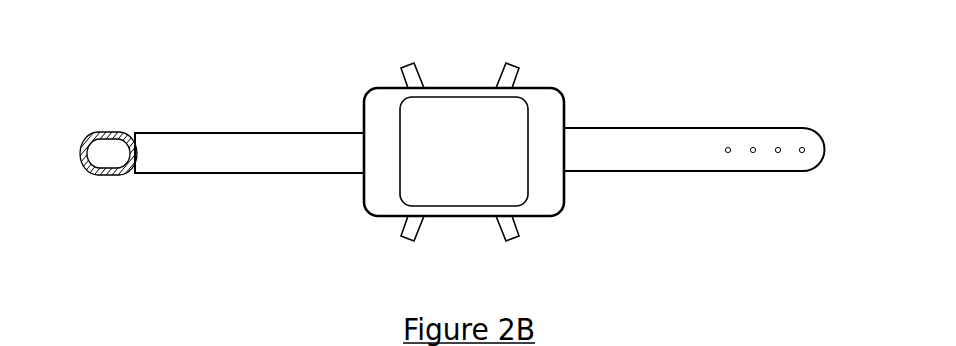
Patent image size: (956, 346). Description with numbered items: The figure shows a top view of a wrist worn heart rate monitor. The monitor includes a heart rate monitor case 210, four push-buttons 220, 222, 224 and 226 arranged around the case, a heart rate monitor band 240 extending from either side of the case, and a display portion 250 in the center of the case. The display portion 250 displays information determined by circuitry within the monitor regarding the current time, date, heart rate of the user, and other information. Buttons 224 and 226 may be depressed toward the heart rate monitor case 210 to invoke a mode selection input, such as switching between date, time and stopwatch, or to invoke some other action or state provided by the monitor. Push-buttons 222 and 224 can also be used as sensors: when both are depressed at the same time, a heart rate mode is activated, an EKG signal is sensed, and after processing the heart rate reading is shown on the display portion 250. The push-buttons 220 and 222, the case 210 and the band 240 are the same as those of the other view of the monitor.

The heart rate monitor case 210 is at (563, 98).
The push-button 220 is at (408, 238).
The push-button 222 is at (513, 238).
The push-button 224 is at (410, 66).
The push-button 226 is at (514, 67).
The heart rate monitor band 240 is at (640, 165).
The display portion 250 is at (437, 205).